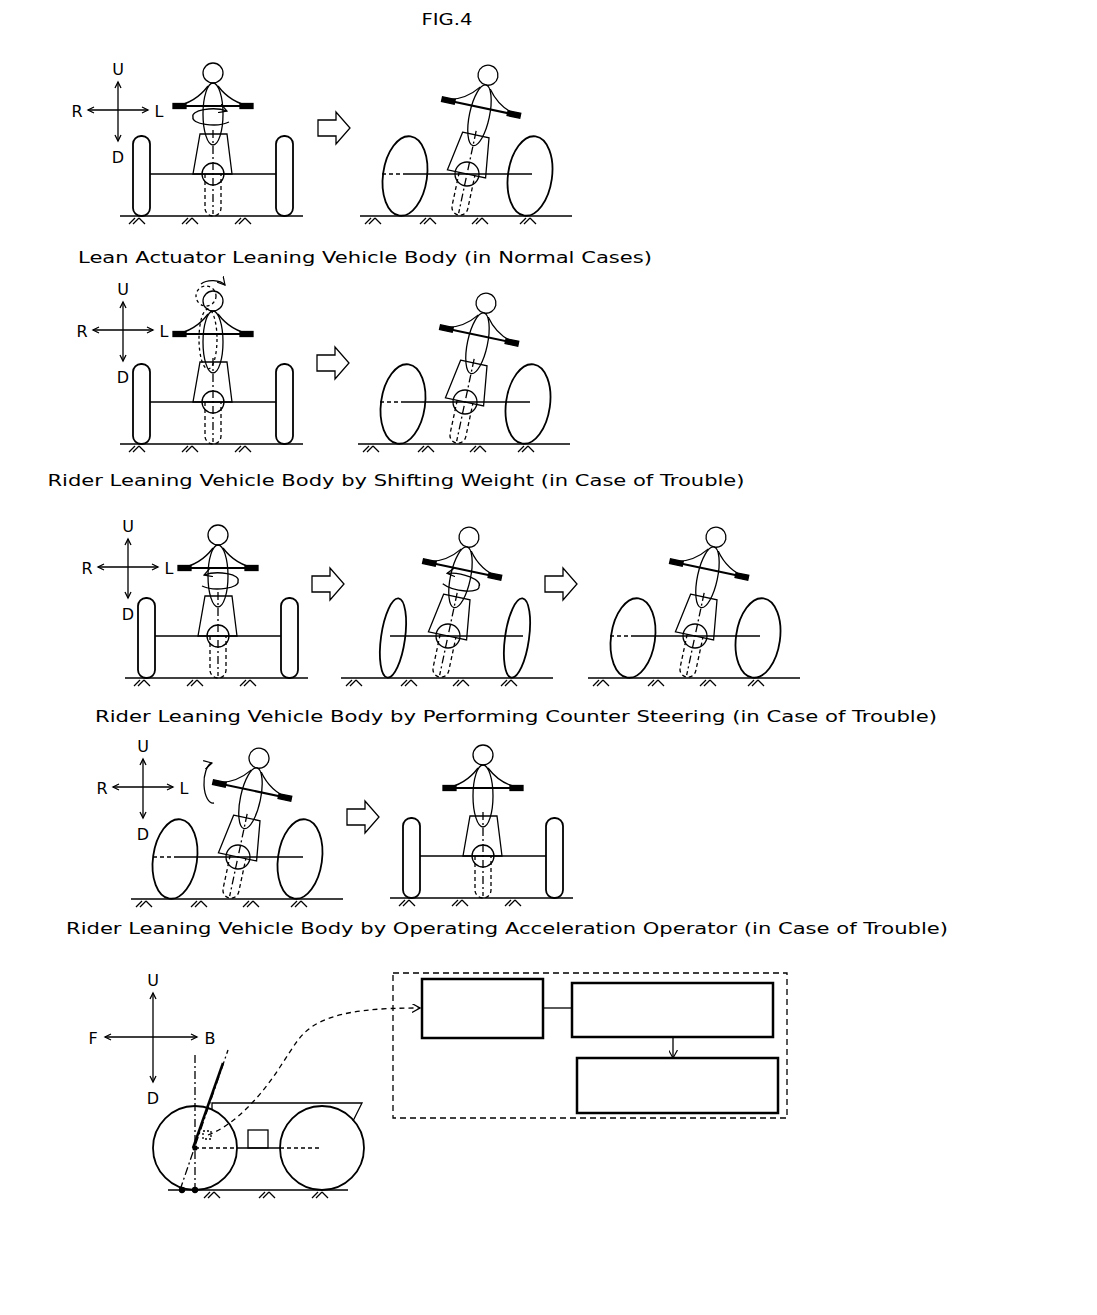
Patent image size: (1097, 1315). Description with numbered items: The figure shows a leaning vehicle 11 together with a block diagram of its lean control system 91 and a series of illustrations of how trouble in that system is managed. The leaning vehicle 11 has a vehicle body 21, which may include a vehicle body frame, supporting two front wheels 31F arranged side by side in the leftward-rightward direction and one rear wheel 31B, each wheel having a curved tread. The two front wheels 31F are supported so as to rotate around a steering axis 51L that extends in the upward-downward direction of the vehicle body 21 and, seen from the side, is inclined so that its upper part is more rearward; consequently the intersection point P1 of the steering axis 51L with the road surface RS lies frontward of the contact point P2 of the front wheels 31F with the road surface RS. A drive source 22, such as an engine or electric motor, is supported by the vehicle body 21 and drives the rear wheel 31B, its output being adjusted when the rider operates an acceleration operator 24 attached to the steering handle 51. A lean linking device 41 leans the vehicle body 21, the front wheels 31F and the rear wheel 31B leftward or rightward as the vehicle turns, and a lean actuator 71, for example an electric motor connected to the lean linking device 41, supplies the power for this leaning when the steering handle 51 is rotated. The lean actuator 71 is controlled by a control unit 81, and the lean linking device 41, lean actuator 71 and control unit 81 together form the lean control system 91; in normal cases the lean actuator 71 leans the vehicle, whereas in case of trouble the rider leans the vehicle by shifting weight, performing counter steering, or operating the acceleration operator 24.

The leaning vehicle 11 is at (248, 1080).
The vehicle body 21 is at (290, 1103).
The drive source 22 is at (254, 1148).
The acceleration operator 24 is at (213, 765).
The front wheels 31F is at (153, 1140).
The rear wheel 31B is at (364, 1162).
The lean linking device 41 is at (702, 1113).
The steering handle 51 is at (225, 1080).
The steering axis 51L is at (226, 1057).
The lean actuator 71 is at (717, 983).
The control unit 81 is at (497, 979).
The lean control system 91 is at (443, 1120).
The road surface RS is at (232, 1190).
The intersection point P1 is at (179, 1192).
The contact point P2 is at (194, 1193).